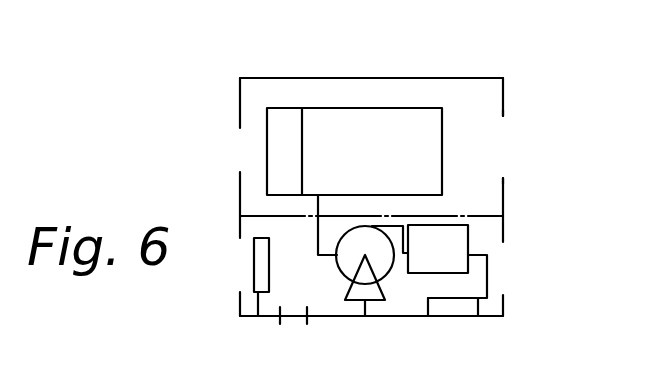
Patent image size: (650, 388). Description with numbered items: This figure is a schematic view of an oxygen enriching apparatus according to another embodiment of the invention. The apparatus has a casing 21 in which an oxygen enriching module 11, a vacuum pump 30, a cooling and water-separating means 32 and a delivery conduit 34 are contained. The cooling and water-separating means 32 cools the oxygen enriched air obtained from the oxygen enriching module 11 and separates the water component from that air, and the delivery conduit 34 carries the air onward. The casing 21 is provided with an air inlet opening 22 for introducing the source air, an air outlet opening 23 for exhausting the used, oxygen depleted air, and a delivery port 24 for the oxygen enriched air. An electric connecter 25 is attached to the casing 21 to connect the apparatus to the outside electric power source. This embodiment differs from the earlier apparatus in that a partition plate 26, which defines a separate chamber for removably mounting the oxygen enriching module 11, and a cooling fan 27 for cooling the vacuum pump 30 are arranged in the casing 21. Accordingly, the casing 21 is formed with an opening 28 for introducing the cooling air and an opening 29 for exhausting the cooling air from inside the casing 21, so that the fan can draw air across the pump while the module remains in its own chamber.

The oxygen enriching module 11 is at (380, 107).
The casing 21 is at (332, 77).
The air inlet opening 22 is at (240, 160).
The air outlet opening 23 is at (503, 132).
The delivery port 24 is at (428, 318).
The electric connecter 25 is at (291, 322).
The partition plate 26 is at (488, 214).
The cooling fan 27 is at (257, 316).
The opening for introducing cooling air 28 is at (243, 262).
The opening for exhausting cooling air 29 is at (506, 254).
The vacuum pump 30 is at (365, 316).
The cooling and water-separating means 32 is at (468, 233).
The delivery conduit 34 is at (483, 318).